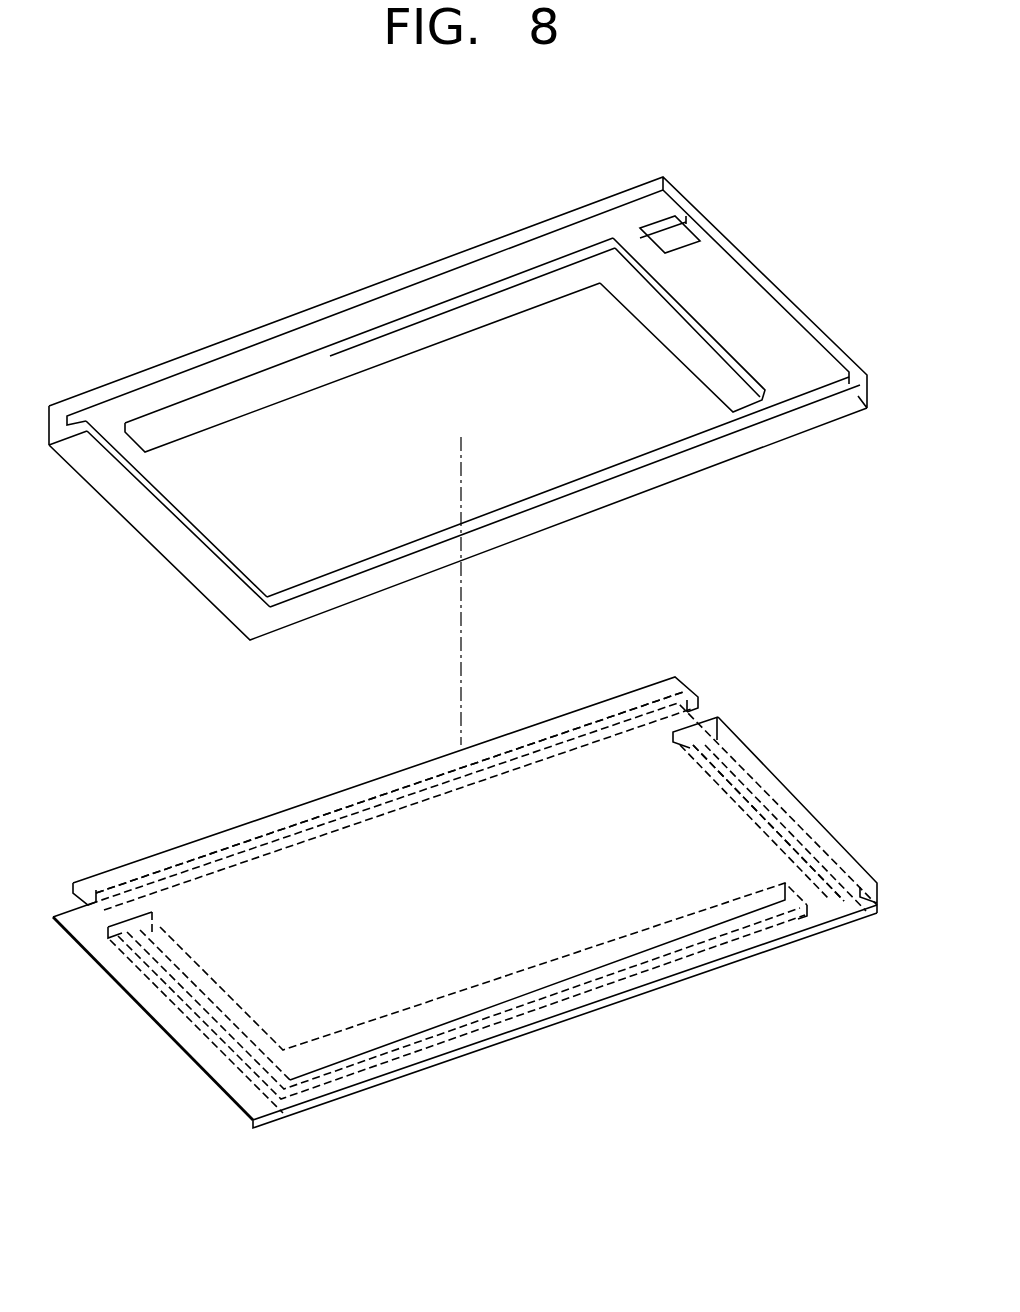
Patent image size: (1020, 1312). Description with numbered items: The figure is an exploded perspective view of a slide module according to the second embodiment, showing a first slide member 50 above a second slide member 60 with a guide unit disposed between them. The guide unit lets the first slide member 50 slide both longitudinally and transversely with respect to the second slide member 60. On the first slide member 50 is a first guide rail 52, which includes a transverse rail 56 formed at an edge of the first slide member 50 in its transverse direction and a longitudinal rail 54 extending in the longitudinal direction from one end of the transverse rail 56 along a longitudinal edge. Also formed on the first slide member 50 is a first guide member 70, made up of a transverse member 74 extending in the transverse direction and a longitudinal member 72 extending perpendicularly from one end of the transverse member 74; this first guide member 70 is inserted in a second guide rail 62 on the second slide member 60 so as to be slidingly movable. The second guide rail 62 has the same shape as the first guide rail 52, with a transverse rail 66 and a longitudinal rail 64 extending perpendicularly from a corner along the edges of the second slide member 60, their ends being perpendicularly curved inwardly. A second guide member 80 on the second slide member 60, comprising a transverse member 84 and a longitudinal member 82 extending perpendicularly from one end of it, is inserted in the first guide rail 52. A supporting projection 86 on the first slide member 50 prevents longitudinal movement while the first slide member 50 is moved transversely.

The first slide member 50 is at (466, 421).
The first guide rail 52 is at (458, 545).
The longitudinal rail 54 is at (378, 594).
The transverse rail 56 is at (203, 582).
The second slide member 60 is at (489, 750).
The second guide rail 62 is at (773, 588).
The longitudinal rail 64 is at (632, 702).
The transverse rail 66 is at (743, 755).
The first guide member 70 is at (445, 291).
The longitudinal member 72 is at (498, 308).
The transverse member 74 is at (655, 320).
The second guide member 80 is at (465, 949).
The longitudinal member 82 is at (372, 1050).
The transverse member 84 is at (250, 1062).
The supporting projection 86 is at (676, 252).